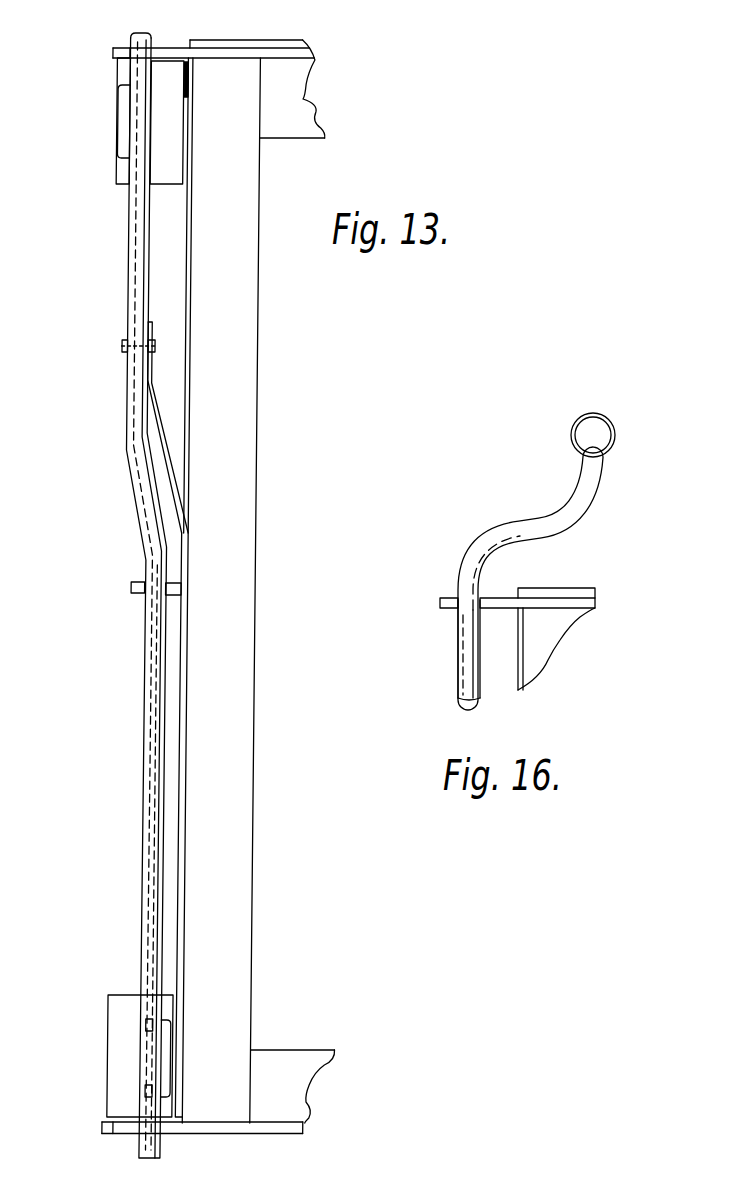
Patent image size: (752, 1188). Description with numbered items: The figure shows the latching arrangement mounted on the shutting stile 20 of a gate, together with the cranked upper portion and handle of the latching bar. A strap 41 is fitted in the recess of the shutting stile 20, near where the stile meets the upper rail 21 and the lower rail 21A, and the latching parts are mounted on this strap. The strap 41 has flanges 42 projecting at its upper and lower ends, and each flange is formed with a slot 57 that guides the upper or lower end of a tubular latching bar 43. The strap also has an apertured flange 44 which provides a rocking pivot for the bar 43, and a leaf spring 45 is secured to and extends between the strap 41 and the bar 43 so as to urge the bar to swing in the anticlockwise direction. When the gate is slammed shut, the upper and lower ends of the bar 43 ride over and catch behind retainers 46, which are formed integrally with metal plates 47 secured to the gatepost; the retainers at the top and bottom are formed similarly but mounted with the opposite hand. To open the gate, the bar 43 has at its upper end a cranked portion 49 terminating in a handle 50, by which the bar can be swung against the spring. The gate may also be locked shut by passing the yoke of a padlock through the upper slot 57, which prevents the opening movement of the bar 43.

In FIG. 13, the shutting stile 20 is at (256, 392).
In FIG. 13, the upper rail 21 is at (313, 115).
In FIG. 13, the lower rail 21A is at (316, 1072).
In FIG. 13, the strap 41 is at (194, 655).
In FIG. 16, the strap 41 is at (522, 647).
In FIG. 13, the flanges 42 is at (122, 47).
In FIG. 16, the flanges 42 is at (447, 598).
In FIG. 13, the tubular latching bar 43 is at (138, 290).
In FIG. 16, the tubular latching bar 43 is at (460, 700).
In FIG. 13, the apertured flange 44 is at (143, 587).
In FIG. 13, the leaf spring 45 is at (162, 418).
In FIG. 13, the retainers 46 is at (119, 133).
In FIG. 13, the metal plates 47 is at (165, 166).
In FIG. 16, the cranked portion 49 is at (528, 525).
In FIG. 16, the handle 50 is at (593, 420).
In FIG. 13, the slots 57 is at (164, 52).
In FIG. 16, the slots 57 is at (492, 602).